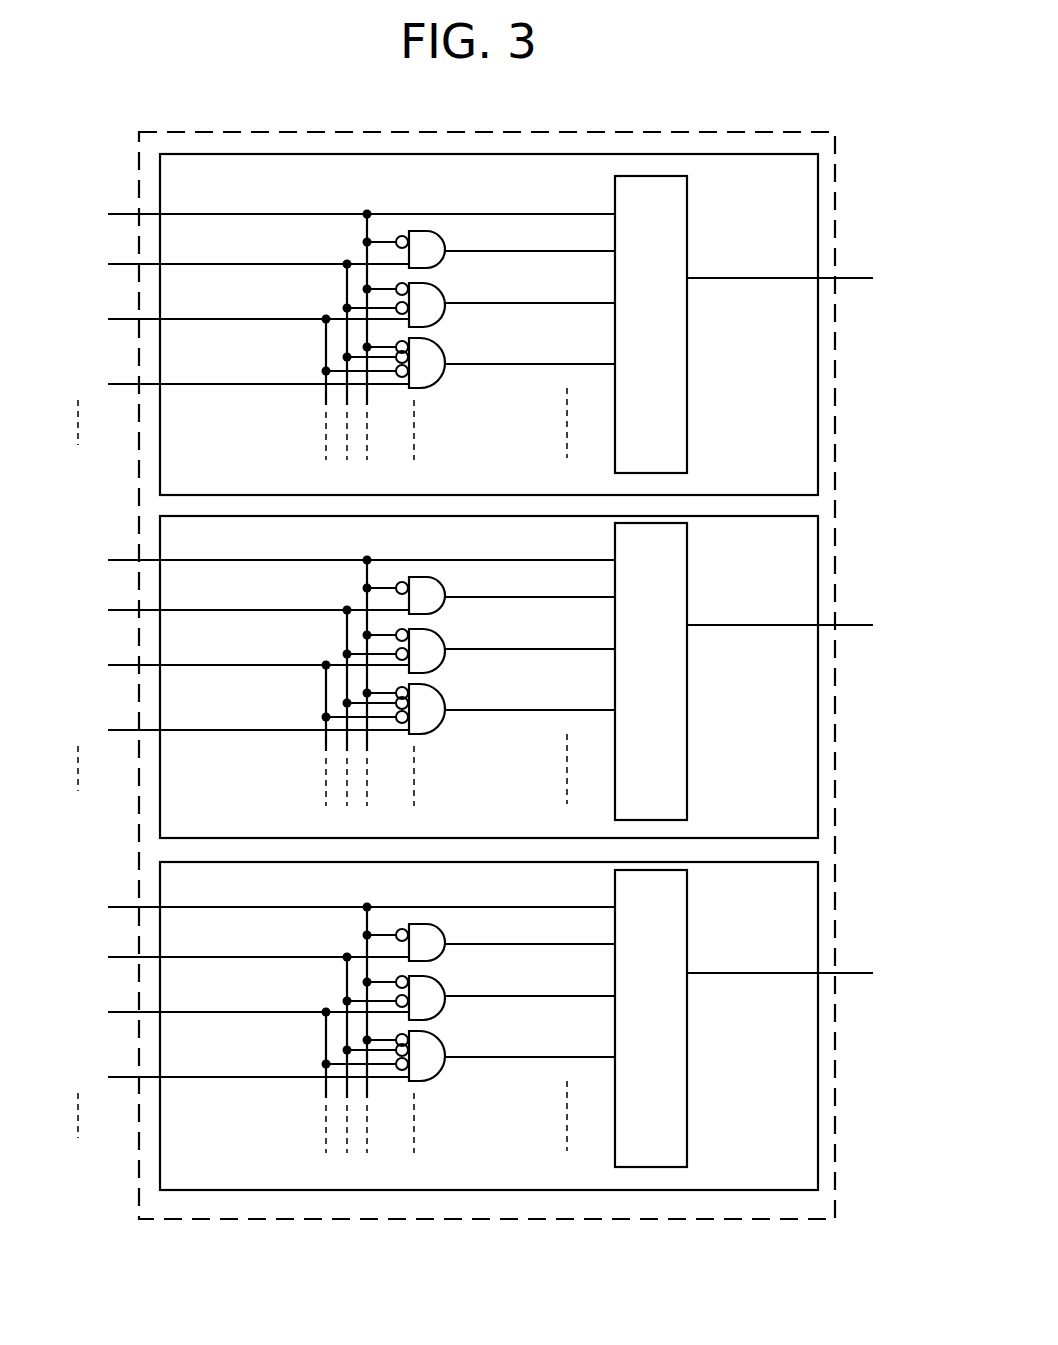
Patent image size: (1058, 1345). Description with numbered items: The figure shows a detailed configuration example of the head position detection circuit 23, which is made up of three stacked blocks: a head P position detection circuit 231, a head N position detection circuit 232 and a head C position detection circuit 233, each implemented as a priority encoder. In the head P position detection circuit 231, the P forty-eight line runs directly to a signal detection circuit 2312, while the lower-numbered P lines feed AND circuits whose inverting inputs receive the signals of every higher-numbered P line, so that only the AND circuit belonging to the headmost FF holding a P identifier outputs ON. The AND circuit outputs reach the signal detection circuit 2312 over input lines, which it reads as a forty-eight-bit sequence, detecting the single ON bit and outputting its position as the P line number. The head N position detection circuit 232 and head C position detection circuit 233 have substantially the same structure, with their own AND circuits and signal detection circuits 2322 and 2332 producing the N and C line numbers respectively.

The head position detection circuit 23 is at (715, 131).
The head P position detection circuit 231 is at (820, 201).
The head N position detection circuit 232 is at (820, 547).
The head C position detection circuit 233 is at (820, 897).
The signal detection circuit 2312 is at (688, 184).
The signal detection circuit 2322 is at (688, 547).
The signal detection circuit 2332 is at (688, 897).